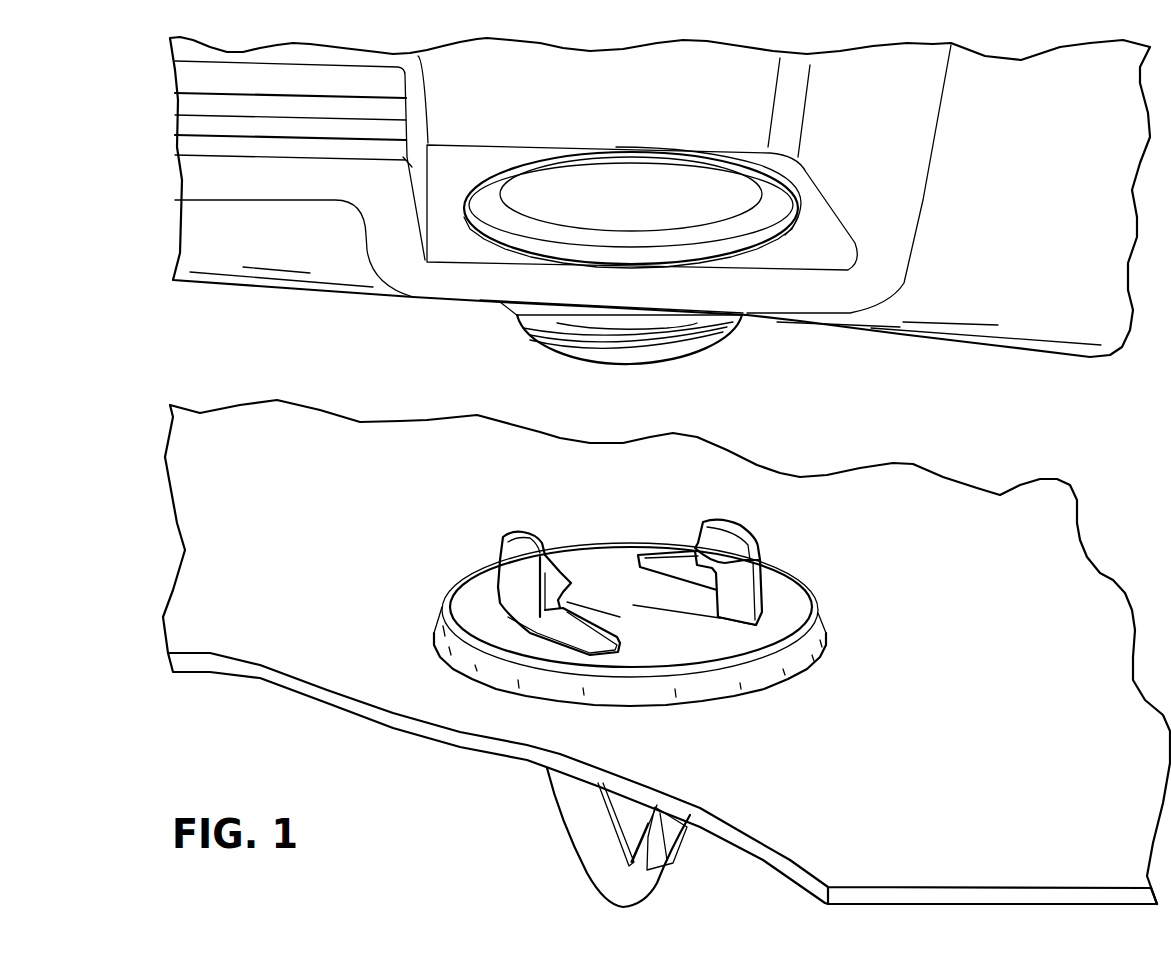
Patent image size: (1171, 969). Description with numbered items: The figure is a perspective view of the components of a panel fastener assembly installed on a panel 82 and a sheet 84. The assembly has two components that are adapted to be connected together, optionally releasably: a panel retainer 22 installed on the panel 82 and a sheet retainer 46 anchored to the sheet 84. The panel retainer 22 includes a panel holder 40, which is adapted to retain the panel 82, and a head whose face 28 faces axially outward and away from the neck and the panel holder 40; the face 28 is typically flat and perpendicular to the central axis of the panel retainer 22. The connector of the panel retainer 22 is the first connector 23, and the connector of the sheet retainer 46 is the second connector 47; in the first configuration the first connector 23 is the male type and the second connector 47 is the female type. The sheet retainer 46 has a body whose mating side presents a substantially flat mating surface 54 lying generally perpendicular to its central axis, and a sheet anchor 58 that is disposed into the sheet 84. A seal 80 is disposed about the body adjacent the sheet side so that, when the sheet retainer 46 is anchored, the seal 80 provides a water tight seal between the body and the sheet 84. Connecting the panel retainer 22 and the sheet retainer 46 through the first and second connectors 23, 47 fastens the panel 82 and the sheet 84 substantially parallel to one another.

The panel retainer 22 is at (637, 180).
The first connector 23 is at (511, 334).
The face 28 is at (630, 365).
The panel holder 40 is at (747, 245).
The panel 82 is at (808, 255).
The sheet 84 is at (1048, 572).
The second connector 47 is at (600, 658).
The mating surface 54 is at (620, 593).
The seal 80 is at (460, 662).
The sheet retainer 46 is at (640, 650).
The sheet anchor 58 is at (648, 882).